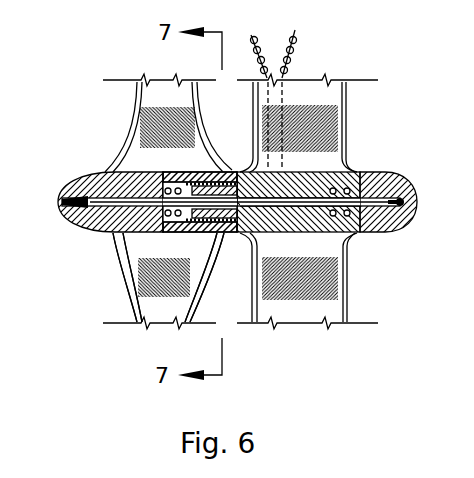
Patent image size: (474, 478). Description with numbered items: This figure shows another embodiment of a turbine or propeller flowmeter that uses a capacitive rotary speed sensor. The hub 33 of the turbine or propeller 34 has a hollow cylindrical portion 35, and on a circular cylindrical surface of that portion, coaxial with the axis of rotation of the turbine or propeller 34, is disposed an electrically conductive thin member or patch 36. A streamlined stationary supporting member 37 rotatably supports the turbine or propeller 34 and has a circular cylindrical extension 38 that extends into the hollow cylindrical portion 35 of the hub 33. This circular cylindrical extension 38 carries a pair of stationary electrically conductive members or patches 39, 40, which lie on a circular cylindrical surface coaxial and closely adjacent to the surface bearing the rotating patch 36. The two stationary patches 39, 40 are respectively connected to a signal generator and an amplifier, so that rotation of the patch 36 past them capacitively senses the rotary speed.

The hub 33 is at (85, 172).
The turbine or propeller 34 is at (147, 247).
The hollow cylindrical portion 35 is at (178, 234).
The electrically conductive thin member or patch 36 is at (210, 172).
The streamlined stationary supporting member 37 is at (305, 173).
The circular cylindrical extension 38 is at (181, 172).
The stationary electrically conductive member or patch 39 is at (197, 173).
The stationary electrically conductive member or patch 40 is at (222, 235).